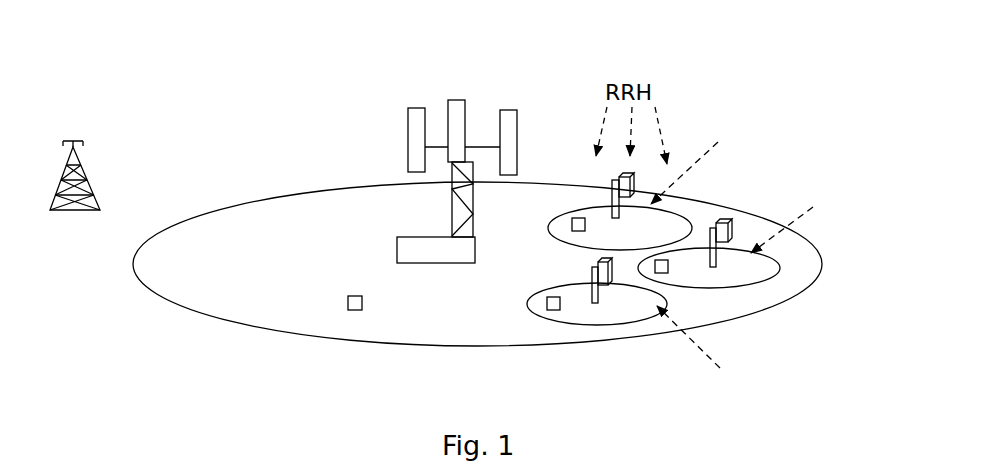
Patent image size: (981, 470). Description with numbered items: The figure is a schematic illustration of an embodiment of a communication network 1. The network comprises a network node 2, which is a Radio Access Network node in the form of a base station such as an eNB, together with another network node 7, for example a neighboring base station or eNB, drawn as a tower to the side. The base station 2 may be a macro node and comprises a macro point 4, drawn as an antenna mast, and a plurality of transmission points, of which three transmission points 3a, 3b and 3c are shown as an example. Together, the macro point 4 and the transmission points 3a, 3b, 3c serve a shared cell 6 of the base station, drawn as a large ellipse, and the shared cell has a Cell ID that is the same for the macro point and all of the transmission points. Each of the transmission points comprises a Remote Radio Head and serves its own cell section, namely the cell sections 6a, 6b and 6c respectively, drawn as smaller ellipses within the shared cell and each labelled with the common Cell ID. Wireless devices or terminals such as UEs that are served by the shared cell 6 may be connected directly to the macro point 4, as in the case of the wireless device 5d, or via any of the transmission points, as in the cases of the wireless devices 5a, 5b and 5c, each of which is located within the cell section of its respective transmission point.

The communication network 1 is at (143, 66).
The network node 2 is at (700, 82).
The transmission point 3a is at (607, 288).
The transmission point 3b is at (730, 225).
The transmission point 3c is at (633, 176).
The macro point 4 is at (466, 141).
The wireless device 5a is at (548, 313).
The wireless device 5b is at (668, 274).
The wireless device 5c is at (581, 217).
The wireless device 5d is at (352, 310).
The shared cell 6 is at (247, 308).
The cell section 6a is at (590, 316).
The cell section 6b is at (752, 272).
The cell section 6c is at (662, 221).
The network node 7 is at (80, 150).